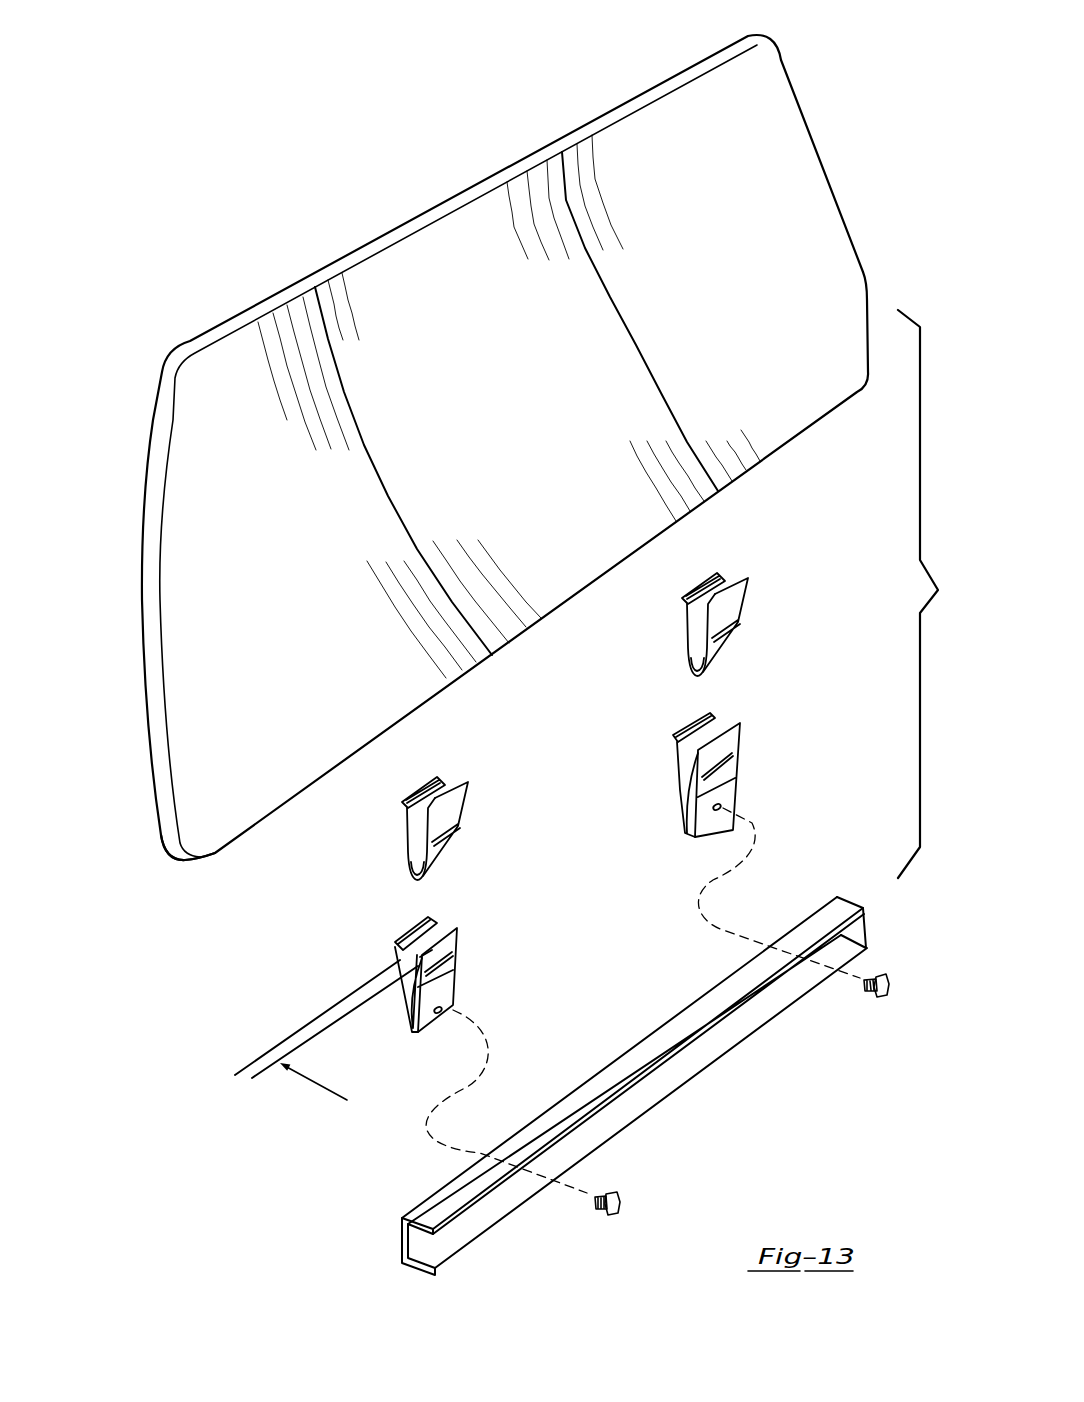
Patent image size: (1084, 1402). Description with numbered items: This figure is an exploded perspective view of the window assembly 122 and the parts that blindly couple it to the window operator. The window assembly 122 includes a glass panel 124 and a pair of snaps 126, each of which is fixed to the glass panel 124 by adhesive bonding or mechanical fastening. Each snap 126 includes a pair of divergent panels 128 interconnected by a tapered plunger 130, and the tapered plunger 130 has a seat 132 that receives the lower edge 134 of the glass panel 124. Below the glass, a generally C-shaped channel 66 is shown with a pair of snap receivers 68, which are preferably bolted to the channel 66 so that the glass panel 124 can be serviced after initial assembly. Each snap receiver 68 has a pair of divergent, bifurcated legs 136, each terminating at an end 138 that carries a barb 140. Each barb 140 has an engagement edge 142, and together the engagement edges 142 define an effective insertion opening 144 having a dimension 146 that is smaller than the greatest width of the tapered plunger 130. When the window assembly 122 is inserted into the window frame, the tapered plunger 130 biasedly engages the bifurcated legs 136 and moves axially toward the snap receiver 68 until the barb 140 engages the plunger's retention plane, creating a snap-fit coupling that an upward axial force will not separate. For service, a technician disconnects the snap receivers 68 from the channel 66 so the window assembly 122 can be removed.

The channel 66 is at (423, 1210).
The snap receivers 68 is at (561, 861).
The window assembly 122 is at (317, 168).
The glass panel 124 is at (212, 355).
The snaps 126 is at (568, 687).
The divergent panels 128 is at (712, 582).
The tapered plunger 130 is at (730, 643).
The seat 132 is at (693, 673).
The lower edge 134 is at (200, 852).
The bifurcated legs 136 is at (732, 745).
The end 138 is at (748, 732).
The barb 140 is at (670, 743).
The engagement edge 142 is at (713, 720).
The effective insertion opening 144 is at (422, 943).
The dimension 146 is at (262, 1054).